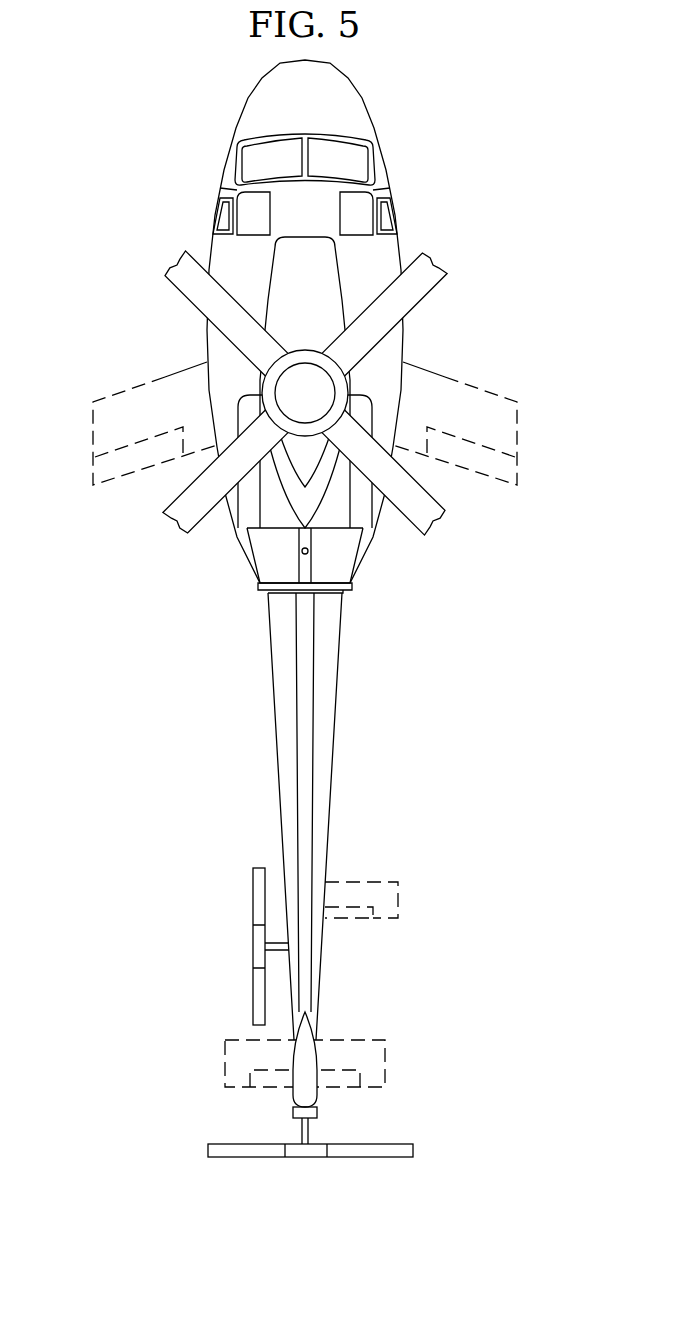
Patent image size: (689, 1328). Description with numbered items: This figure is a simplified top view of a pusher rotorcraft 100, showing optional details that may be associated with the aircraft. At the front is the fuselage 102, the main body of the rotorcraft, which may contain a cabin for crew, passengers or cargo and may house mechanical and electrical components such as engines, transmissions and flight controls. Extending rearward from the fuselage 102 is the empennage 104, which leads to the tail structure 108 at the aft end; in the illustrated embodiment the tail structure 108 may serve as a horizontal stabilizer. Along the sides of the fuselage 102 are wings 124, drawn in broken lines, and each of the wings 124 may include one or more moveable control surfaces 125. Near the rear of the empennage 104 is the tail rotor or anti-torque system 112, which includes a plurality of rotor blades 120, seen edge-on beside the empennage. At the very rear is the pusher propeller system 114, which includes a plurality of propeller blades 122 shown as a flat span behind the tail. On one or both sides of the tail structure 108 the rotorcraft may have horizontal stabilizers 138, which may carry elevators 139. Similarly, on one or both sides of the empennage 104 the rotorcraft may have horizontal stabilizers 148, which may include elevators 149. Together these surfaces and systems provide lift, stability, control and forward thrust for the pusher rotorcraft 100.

The pusher rotorcraft 100 is at (92, 62).
The fuselage 102 is at (368, 112).
The empennage 104 is at (277, 723).
The tail structure 108 is at (182, 1031).
The anti-torque system 112 is at (218, 941).
The pusher propeller system 114 is at (310, 1184).
The rotor blades 120 is at (253, 885).
The propeller blades 122 is at (245, 1158).
The wings 124 is at (309, 441).
The moveable control surfaces 125 is at (105, 472).
The horizontal stabilizers 138 is at (308, 1051).
The elevators 139 is at (268, 1083).
The horizontal stabilizers 148 is at (375, 899).
The elevators 149 is at (350, 917).